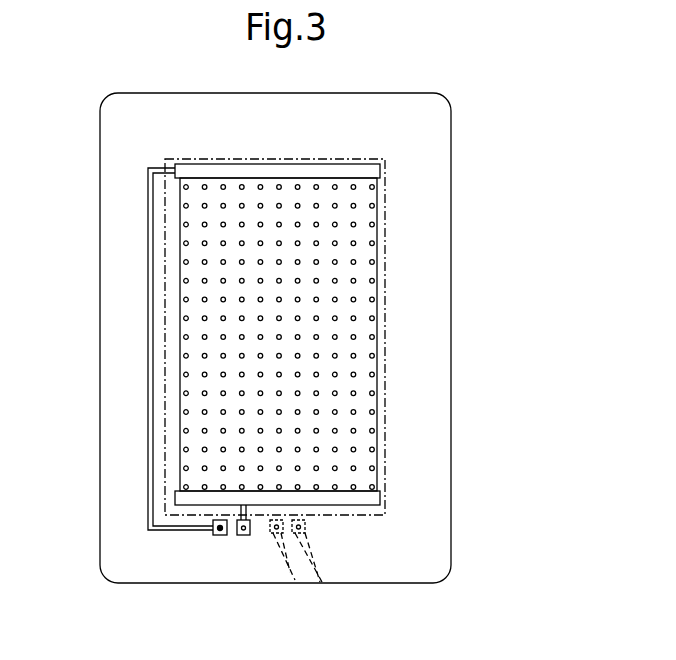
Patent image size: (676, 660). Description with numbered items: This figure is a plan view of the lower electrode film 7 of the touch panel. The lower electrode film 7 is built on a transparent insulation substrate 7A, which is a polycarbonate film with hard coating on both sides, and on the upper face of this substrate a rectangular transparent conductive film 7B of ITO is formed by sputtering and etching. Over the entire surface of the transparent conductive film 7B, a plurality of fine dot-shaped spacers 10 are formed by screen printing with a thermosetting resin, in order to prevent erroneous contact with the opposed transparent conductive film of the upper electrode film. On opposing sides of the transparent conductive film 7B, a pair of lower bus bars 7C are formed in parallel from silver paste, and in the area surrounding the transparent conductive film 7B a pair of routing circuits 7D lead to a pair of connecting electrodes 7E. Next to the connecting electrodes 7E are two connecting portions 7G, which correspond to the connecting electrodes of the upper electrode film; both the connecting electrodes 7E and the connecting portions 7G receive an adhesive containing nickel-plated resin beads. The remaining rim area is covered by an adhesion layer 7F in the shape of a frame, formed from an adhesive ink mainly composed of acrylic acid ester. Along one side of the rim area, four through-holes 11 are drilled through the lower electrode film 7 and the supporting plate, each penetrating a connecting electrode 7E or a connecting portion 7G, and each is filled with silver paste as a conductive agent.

The lower electrode film 7 is at (319, 338).
The transparent insulation substrate 7A is at (432, 278).
The transparent conductive film 7B is at (309, 334).
The lower bus bars 7C is at (314, 175).
The routing circuits 7D is at (153, 290).
The connecting electrodes 7E is at (243, 537).
The adhesion layer 7F is at (230, 159).
The connecting portions 7G is at (322, 583).
The dot-shaped spacers 10 is at (356, 206).
The through-holes 11 is at (218, 530).